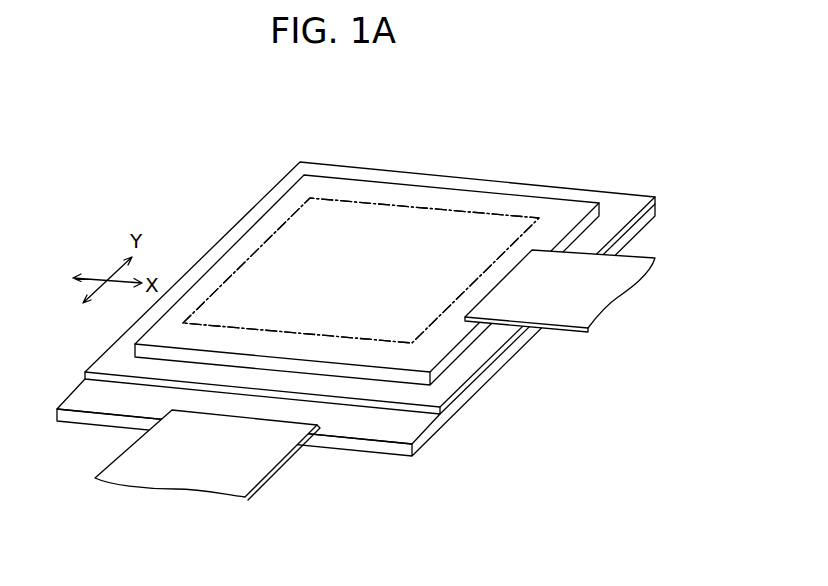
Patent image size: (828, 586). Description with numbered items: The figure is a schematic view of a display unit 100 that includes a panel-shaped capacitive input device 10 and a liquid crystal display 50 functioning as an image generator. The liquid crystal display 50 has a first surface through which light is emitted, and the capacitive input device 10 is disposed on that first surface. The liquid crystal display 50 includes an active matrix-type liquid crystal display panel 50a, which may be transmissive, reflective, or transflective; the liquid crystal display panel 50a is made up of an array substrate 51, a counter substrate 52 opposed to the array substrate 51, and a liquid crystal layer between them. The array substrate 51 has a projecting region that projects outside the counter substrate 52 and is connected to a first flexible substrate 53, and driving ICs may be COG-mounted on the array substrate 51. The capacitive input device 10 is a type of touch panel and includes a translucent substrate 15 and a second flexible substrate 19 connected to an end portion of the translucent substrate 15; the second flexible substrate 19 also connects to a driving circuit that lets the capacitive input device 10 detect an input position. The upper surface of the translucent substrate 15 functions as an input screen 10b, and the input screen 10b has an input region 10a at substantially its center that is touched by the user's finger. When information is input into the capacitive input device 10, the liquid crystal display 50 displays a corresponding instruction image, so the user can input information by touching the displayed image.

The display unit 100 is at (377, 327).
The capacitive input device 10 is at (379, 243).
The input region 10a is at (340, 200).
The input screen 10b is at (361, 270).
The translucent substrate 15 is at (405, 193).
The second flexible substrate 19 is at (567, 315).
The liquid crystal display 50 is at (377, 357).
The liquid crystal display panel 50a is at (447, 510).
The array substrate 51 is at (367, 446).
The counter substrate 52 is at (418, 409).
The first flexible substrate 53 is at (287, 463).